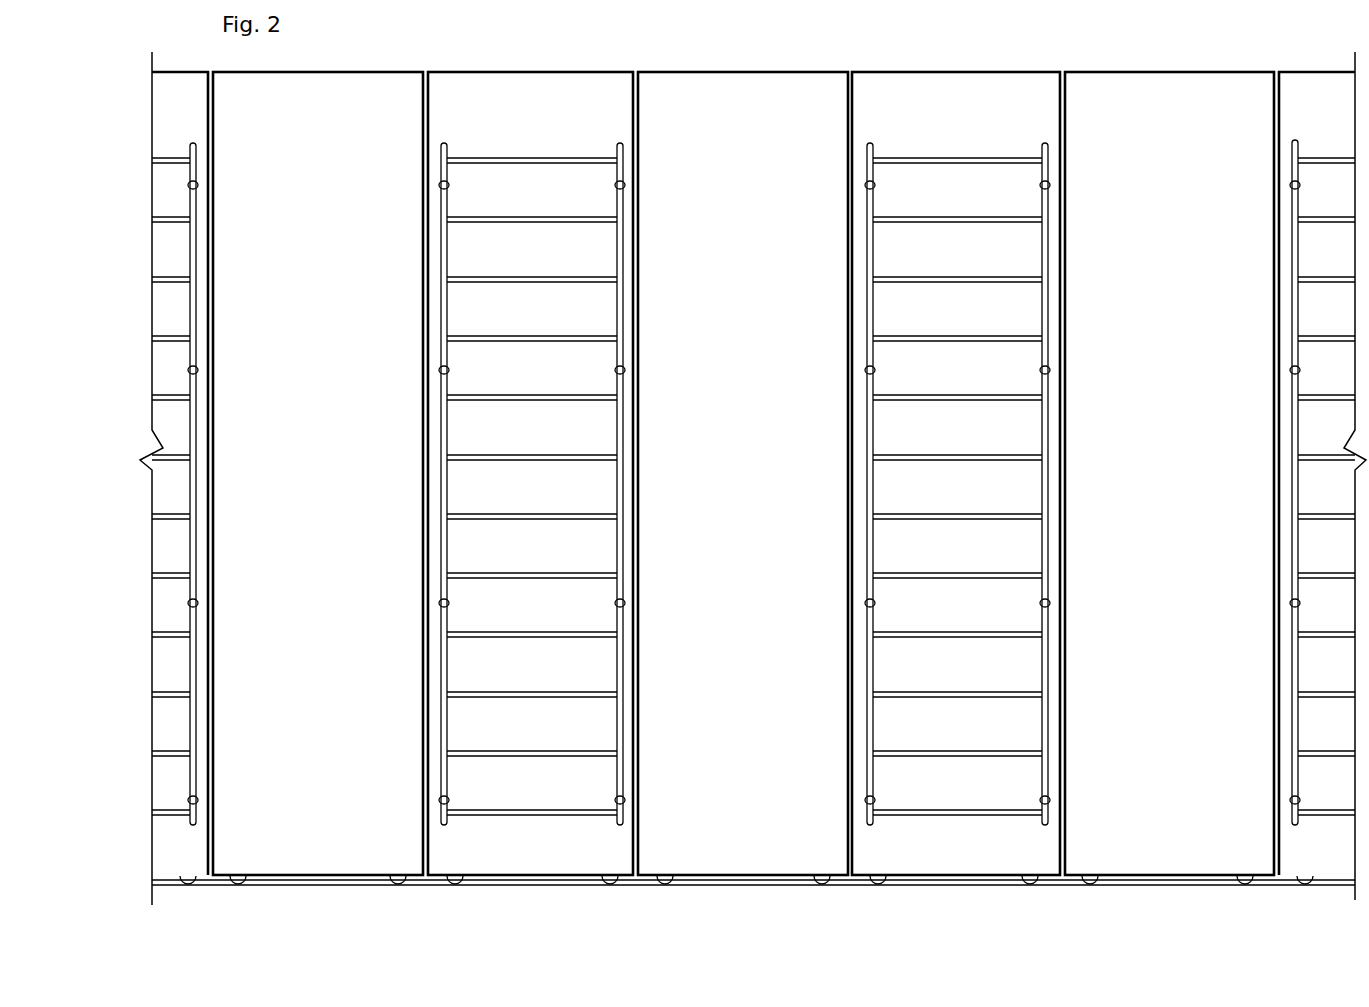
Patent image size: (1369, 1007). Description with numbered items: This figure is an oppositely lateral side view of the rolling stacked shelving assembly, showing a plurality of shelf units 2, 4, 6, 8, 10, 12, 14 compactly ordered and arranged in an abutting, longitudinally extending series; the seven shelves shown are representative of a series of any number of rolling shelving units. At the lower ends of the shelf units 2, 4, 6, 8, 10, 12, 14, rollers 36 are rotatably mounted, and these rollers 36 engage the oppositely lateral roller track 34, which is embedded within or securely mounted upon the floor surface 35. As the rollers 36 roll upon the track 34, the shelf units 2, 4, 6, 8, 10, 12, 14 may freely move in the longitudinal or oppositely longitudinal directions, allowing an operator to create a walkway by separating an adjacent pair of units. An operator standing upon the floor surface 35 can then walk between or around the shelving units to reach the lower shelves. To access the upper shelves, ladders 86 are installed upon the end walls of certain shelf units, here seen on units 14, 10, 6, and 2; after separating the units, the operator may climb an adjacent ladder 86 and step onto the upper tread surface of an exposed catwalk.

The shelf unit 2 is at (1313, 112).
The shelf unit 4 is at (1177, 115).
The shelf unit 6 is at (920, 108).
The shelf unit 8 is at (746, 138).
The shelf unit 10 is at (525, 130).
The shelf unit 12 is at (287, 122).
The shelf unit 14 is at (167, 123).
The oppositely lateral roller track 34 is at (497, 886).
The floor surface 35 is at (697, 910).
The roller 36 is at (1036, 886).
The ladder 86 is at (447, 343).